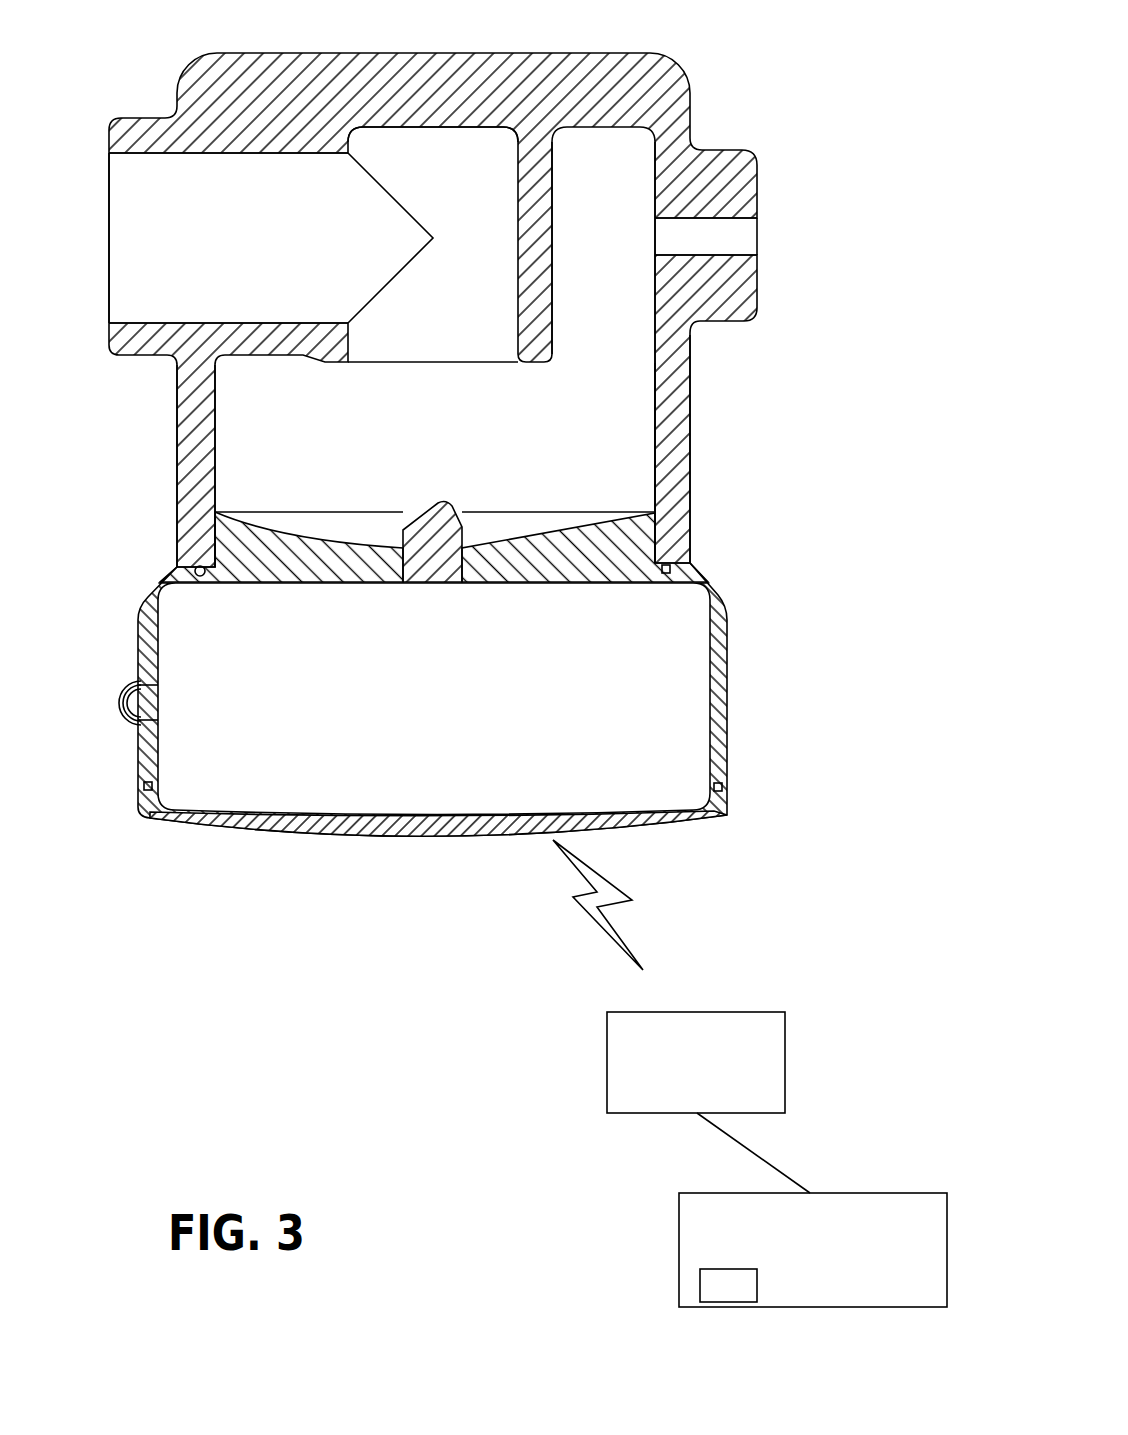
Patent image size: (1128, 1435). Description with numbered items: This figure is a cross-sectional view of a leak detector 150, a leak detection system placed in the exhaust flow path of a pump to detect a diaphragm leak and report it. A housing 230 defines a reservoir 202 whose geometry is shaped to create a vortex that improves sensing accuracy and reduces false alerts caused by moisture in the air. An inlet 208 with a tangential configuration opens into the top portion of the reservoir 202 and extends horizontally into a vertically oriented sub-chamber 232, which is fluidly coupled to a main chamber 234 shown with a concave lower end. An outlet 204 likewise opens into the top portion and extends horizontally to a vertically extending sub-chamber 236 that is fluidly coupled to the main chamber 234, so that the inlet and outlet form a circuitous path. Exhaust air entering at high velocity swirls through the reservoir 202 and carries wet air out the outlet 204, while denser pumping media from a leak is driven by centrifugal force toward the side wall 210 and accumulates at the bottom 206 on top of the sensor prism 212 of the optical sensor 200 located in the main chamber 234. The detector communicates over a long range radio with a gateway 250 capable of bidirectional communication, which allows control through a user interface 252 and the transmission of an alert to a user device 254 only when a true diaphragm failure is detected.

The leak detector 150 is at (466, 419).
The housing 230 is at (220, 97).
The outlet 204 is at (268, 279).
The sub-chamber 236 is at (458, 195).
The sub-chamber 232 is at (608, 210).
The inlet 208 is at (742, 237).
The reservoir 202 is at (602, 397).
The side wall 210 is at (205, 458).
The main chamber 234 is at (470, 447).
The optical sensor 200 is at (478, 532).
The sensor prism 212 is at (454, 497).
The bottom 206 is at (470, 543).
The gateway 250 is at (607, 1057).
The user device 254 is at (679, 1245).
The user interface 252 is at (700, 1275).